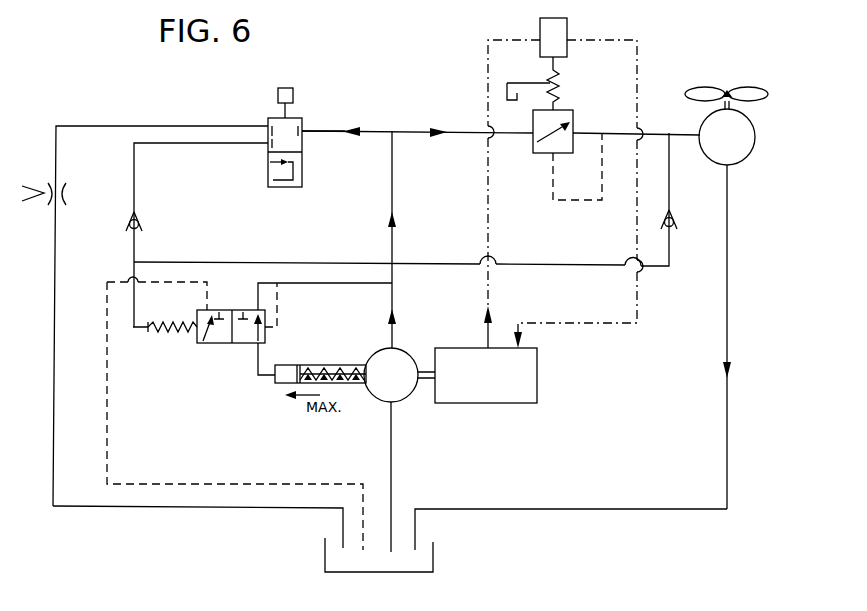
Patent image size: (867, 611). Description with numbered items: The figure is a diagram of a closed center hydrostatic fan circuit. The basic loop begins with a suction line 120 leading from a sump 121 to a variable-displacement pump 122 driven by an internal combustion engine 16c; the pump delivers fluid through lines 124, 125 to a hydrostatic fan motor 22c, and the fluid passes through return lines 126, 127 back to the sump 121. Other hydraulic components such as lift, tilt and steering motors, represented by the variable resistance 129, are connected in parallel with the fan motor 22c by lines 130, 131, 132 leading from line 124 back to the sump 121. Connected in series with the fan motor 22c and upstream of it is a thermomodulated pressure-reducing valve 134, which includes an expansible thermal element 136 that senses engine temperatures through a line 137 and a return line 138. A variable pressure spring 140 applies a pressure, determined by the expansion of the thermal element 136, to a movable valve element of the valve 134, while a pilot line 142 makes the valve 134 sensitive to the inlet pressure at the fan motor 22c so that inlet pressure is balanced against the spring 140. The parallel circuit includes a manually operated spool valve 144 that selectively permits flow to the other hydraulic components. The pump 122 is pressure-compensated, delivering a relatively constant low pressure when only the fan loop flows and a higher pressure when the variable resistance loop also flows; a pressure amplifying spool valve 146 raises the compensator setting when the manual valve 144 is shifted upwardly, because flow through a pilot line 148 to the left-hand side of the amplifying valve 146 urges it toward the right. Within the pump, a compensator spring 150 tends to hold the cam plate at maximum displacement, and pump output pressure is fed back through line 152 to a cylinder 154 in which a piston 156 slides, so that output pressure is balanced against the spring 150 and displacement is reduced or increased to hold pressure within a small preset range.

The internal combustion engine 16c is at (537, 378).
The hydrostatic fan motor 22c is at (755, 142).
The suction line 120 is at (393, 462).
The sump 121 is at (434, 562).
The variable-displacement pump 122 is at (404, 352).
The line 124 is at (393, 207).
The line 125 is at (466, 133).
The return line 126 is at (729, 312).
The return line 127 is at (555, 510).
The variable resistance 129 is at (68, 196).
The line 130 is at (334, 130).
The line 131 is at (53, 252).
The line 132 is at (216, 506).
The thermomodulated pressure-reducing valve 134 is at (566, 110).
The expansible thermal element 136 is at (567, 30).
The line 137 is at (528, 40).
The return line 138 is at (637, 60).
The variable pressure spring 140 is at (559, 85).
The pilot line 142 is at (606, 200).
The manually operated spool valve 144 is at (268, 118).
The pressure amplifying spool valve 146 is at (243, 343).
The pilot line 148 is at (137, 200).
The pump compensator spring 150 is at (340, 365).
The line 152 is at (333, 285).
The cylinder 154 is at (275, 385).
The piston 156 is at (292, 365).